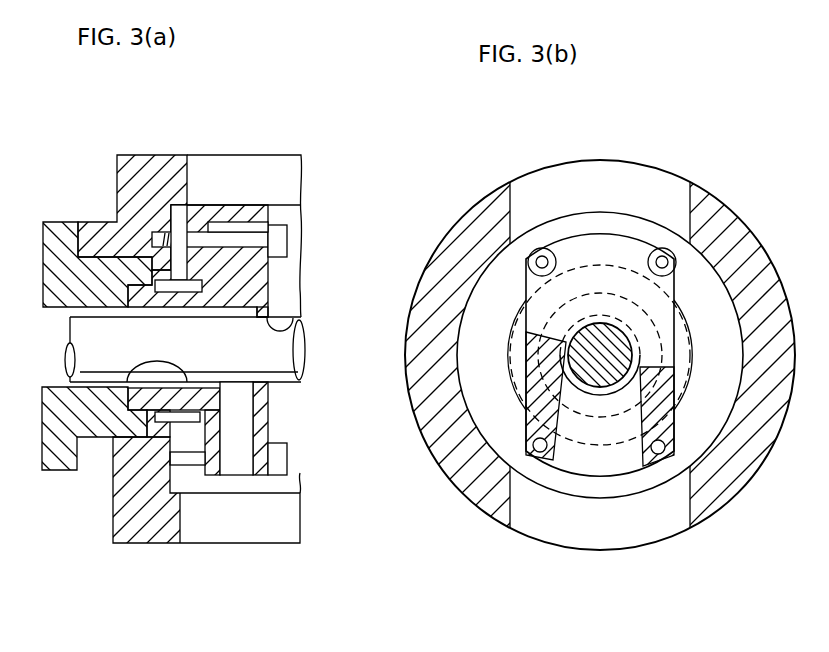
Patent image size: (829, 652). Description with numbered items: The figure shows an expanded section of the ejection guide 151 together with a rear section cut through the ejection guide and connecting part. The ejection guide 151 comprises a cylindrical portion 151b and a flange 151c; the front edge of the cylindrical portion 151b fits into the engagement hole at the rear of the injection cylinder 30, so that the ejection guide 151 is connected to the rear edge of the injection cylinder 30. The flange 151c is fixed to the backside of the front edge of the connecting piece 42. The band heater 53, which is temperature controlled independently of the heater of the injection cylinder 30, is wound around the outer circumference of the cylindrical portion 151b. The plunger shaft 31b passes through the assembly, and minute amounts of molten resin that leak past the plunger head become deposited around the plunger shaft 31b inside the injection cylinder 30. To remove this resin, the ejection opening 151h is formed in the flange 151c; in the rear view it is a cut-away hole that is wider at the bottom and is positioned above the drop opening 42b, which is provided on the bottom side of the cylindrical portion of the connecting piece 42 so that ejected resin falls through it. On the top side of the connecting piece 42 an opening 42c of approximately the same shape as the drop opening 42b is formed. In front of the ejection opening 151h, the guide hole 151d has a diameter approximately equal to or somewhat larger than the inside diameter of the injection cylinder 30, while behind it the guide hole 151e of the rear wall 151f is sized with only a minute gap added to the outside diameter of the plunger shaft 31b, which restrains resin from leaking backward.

In FIG. 3A, the injection cylinder 30 is at (47, 215).
In FIG. 3A, the connecting piece 42 is at (152, 162).
In FIG. 3A, the drop opening 42b is at (225, 520).
In FIG. 3B, the drop opening 42b is at (543, 527).
In FIG. 3B, the opening 42c is at (568, 188).
In FIG. 3A, the band heater 53 is at (184, 270).
In FIG. 3A, the ejection guide 151 is at (233, 212).
In FIG. 3A, the cylindrical portion 151b is at (173, 413).
In FIG. 3A, the flange 151c is at (252, 220).
In FIG. 3A, the guide hole 151d is at (125, 383).
In FIG. 3A, the guide hole 151e is at (292, 313).
In FIG. 3A, the rear wall 151f is at (272, 415).
In FIG. 3A, the ejection opening 151h is at (242, 455).
In FIG. 3B, the ejection opening 151h is at (613, 457).
In FIG. 3A, the plunger shaft 31b is at (283, 385).
In FIG. 3B, the plunger shaft 31b is at (545, 430).